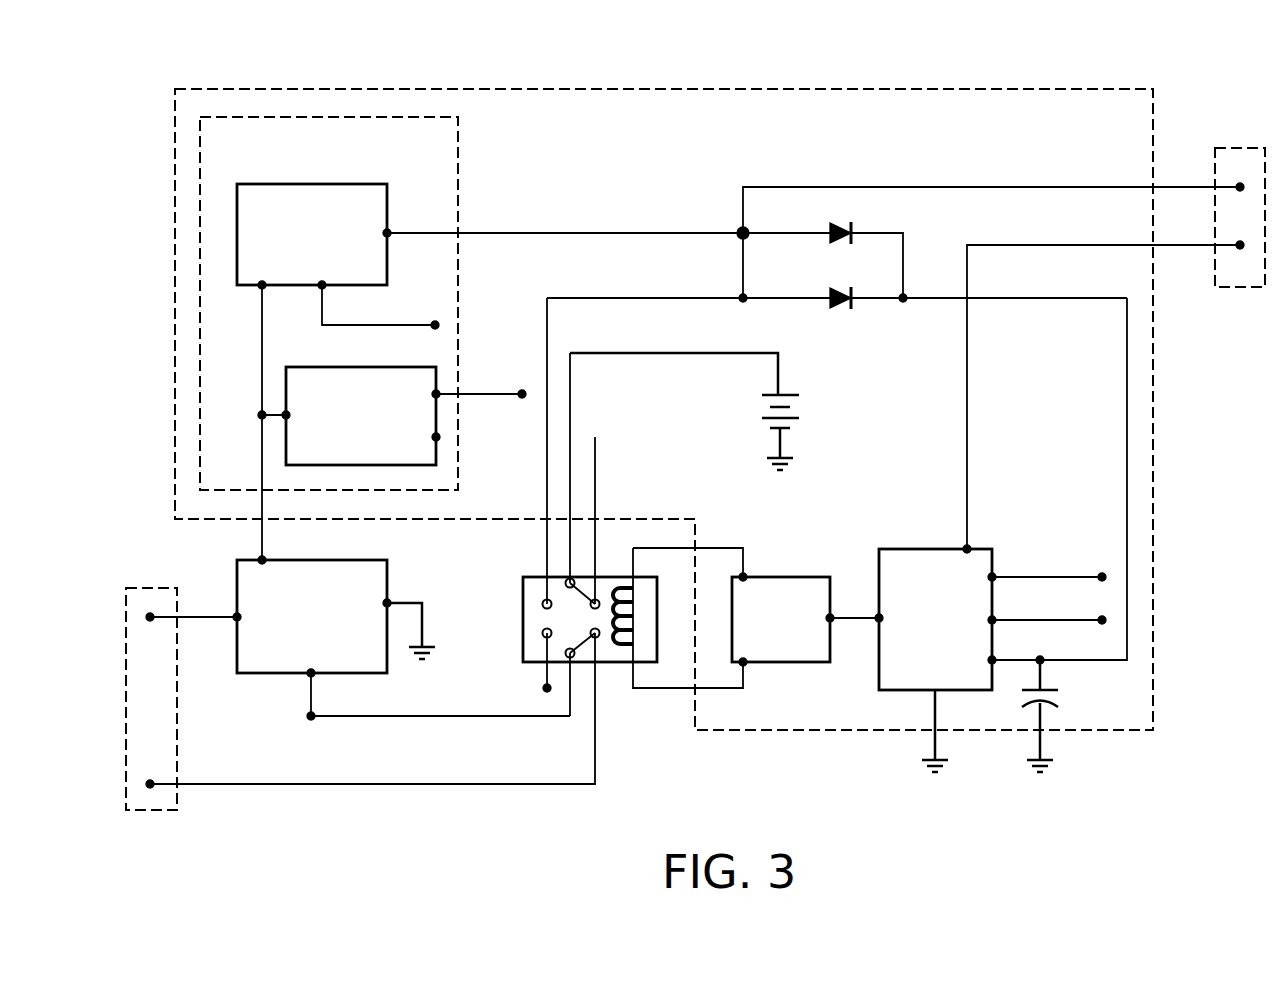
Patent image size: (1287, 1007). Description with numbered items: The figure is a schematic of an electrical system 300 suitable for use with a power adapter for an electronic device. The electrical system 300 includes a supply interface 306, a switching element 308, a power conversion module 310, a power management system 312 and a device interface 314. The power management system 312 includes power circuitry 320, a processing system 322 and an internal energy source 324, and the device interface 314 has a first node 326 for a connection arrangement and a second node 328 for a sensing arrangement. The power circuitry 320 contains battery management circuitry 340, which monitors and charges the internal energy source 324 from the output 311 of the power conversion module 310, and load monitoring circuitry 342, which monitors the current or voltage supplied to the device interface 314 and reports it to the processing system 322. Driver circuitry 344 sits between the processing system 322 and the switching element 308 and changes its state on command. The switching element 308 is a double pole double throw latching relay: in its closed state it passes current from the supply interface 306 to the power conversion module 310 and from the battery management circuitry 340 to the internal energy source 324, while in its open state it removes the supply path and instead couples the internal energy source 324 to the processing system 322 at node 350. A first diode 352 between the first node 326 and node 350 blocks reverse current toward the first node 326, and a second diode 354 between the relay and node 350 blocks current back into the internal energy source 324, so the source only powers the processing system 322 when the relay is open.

The electrical system 300 is at (182, 54).
The supply interface 306 is at (150, 587).
The switching element 308 is at (523, 605).
The power conversion module 310 is at (262, 676).
The output 311 is at (262, 557).
The power management system 312 is at (1153, 492).
The device interface 314 is at (1004, 324).
The power circuitry 320 is at (458, 157).
The processing system 322 is at (905, 549).
The internal energy source 324 is at (797, 394).
The first node 326 is at (1237, 185).
The second node 328 is at (1237, 243).
The battery management circuitry 340 is at (305, 367).
The load monitoring circuitry 342 is at (340, 184).
The driver circuitry 344 is at (800, 577).
The node 350 is at (903, 304).
The first diode 352 is at (830, 243).
The second diode 354 is at (830, 308).